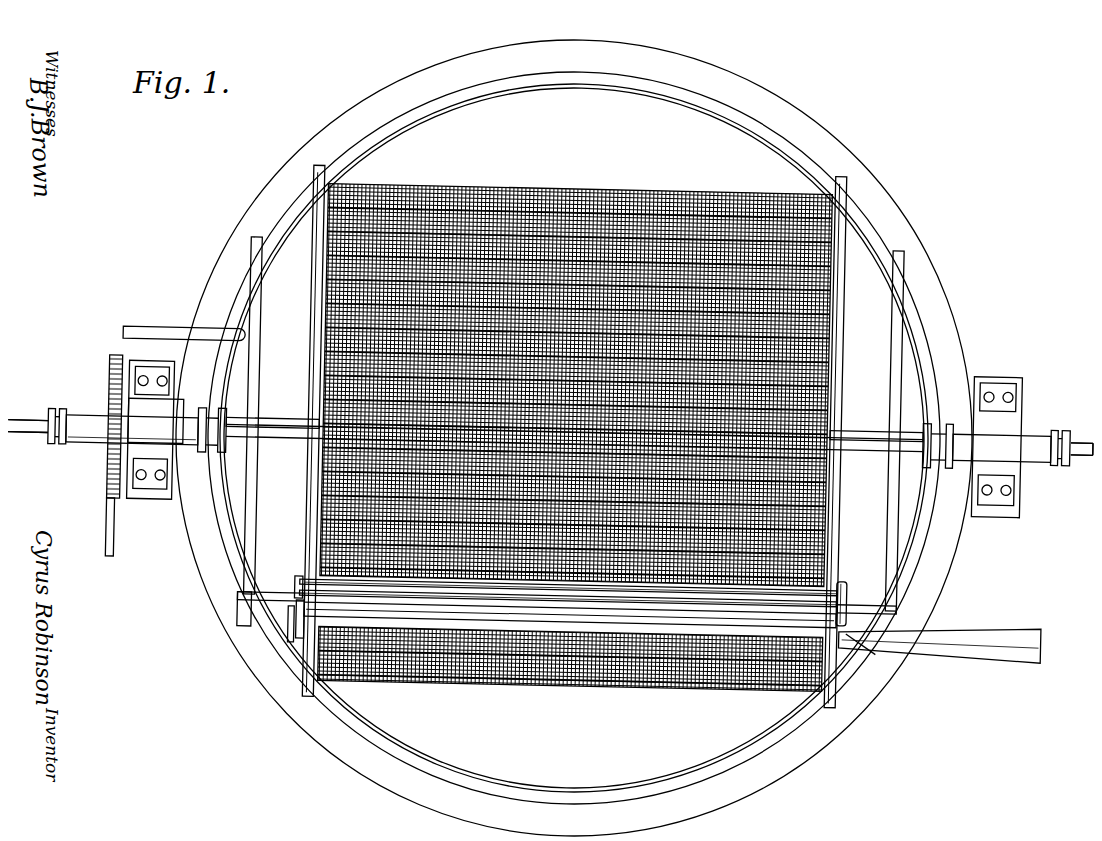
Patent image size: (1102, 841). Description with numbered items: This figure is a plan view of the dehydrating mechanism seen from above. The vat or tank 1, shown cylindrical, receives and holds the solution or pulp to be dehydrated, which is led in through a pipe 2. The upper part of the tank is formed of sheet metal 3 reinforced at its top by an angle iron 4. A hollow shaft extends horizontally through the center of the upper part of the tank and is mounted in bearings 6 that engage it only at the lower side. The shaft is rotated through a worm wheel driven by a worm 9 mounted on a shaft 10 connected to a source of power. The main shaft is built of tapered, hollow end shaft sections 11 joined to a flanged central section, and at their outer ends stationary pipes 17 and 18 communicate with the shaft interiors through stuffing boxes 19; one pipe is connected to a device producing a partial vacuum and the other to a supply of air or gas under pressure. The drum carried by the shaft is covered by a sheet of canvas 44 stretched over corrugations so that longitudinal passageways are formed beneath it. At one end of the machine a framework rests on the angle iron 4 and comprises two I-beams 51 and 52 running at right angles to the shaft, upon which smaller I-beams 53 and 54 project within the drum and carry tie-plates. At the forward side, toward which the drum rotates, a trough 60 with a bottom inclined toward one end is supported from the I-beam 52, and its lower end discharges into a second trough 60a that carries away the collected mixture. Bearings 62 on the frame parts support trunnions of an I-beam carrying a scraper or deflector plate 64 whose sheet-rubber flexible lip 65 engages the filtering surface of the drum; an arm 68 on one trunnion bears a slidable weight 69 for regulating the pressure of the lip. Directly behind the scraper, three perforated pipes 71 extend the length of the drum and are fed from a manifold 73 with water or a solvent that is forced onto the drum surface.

The vat or tank 1 is at (692, 113).
The pipe 2 is at (143, 328).
The sheet metal 3 is at (766, 141).
The angle iron 4 is at (801, 156).
The bearings 6 is at (143, 500).
The worm 9 is at (100, 470).
The shaft 10 is at (104, 530).
The end shaft sections 11 is at (288, 436).
The stationary pipe 17 is at (28, 415).
The stationary pipe 18 is at (1075, 428).
The stuffing boxes 19 is at (50, 450).
The sheet of canvas 44 is at (487, 190).
The I-beam 51 is at (248, 365).
The I-beam 52 is at (302, 266).
The smaller I-beam 53 is at (268, 420).
The smaller I-beam 54 is at (250, 596).
The trough 60 is at (312, 650).
The second trough 60a is at (1015, 615).
The bearings 62 is at (842, 628).
The scraper or deflector plate 64 is at (300, 636).
The flexible lip 65 is at (287, 632).
The arm 68 is at (298, 590).
The slidable weight 69 is at (292, 612).
The pipes 71 is at (303, 575).
The manifold 73 is at (838, 565).